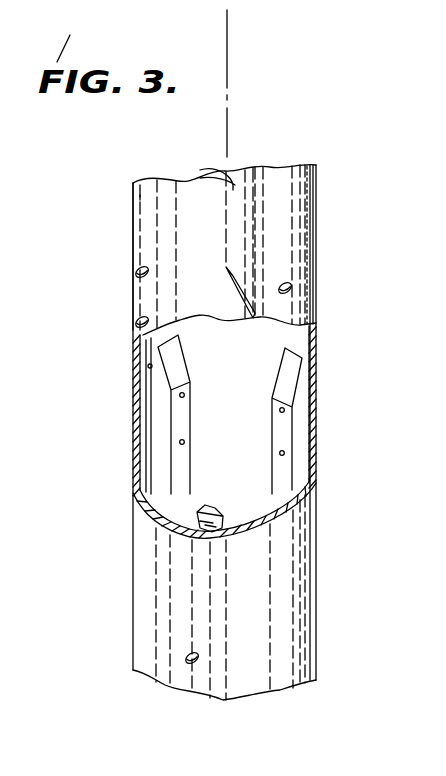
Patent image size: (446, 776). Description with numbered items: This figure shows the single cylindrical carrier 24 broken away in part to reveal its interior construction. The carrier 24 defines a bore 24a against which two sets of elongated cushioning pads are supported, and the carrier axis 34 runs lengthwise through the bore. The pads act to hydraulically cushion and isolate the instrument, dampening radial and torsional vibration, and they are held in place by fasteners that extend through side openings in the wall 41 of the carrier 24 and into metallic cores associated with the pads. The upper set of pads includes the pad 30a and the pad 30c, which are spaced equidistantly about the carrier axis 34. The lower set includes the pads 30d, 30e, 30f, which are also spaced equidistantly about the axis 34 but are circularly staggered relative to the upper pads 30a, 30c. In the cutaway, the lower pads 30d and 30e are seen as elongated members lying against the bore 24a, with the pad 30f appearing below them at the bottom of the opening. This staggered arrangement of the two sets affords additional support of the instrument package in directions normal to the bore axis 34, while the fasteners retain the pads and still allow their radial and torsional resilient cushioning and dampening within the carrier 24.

The carrier 24 is at (336, 356).
The bore 24a is at (150, 364).
The carrier axis 34 is at (227, 40).
The pad 30a is at (200, 168).
The pad 30c is at (140, 196).
The wall 41 is at (298, 222).
The pad 30d is at (163, 422).
The pad 30e is at (298, 456).
The pad 30f is at (204, 515).